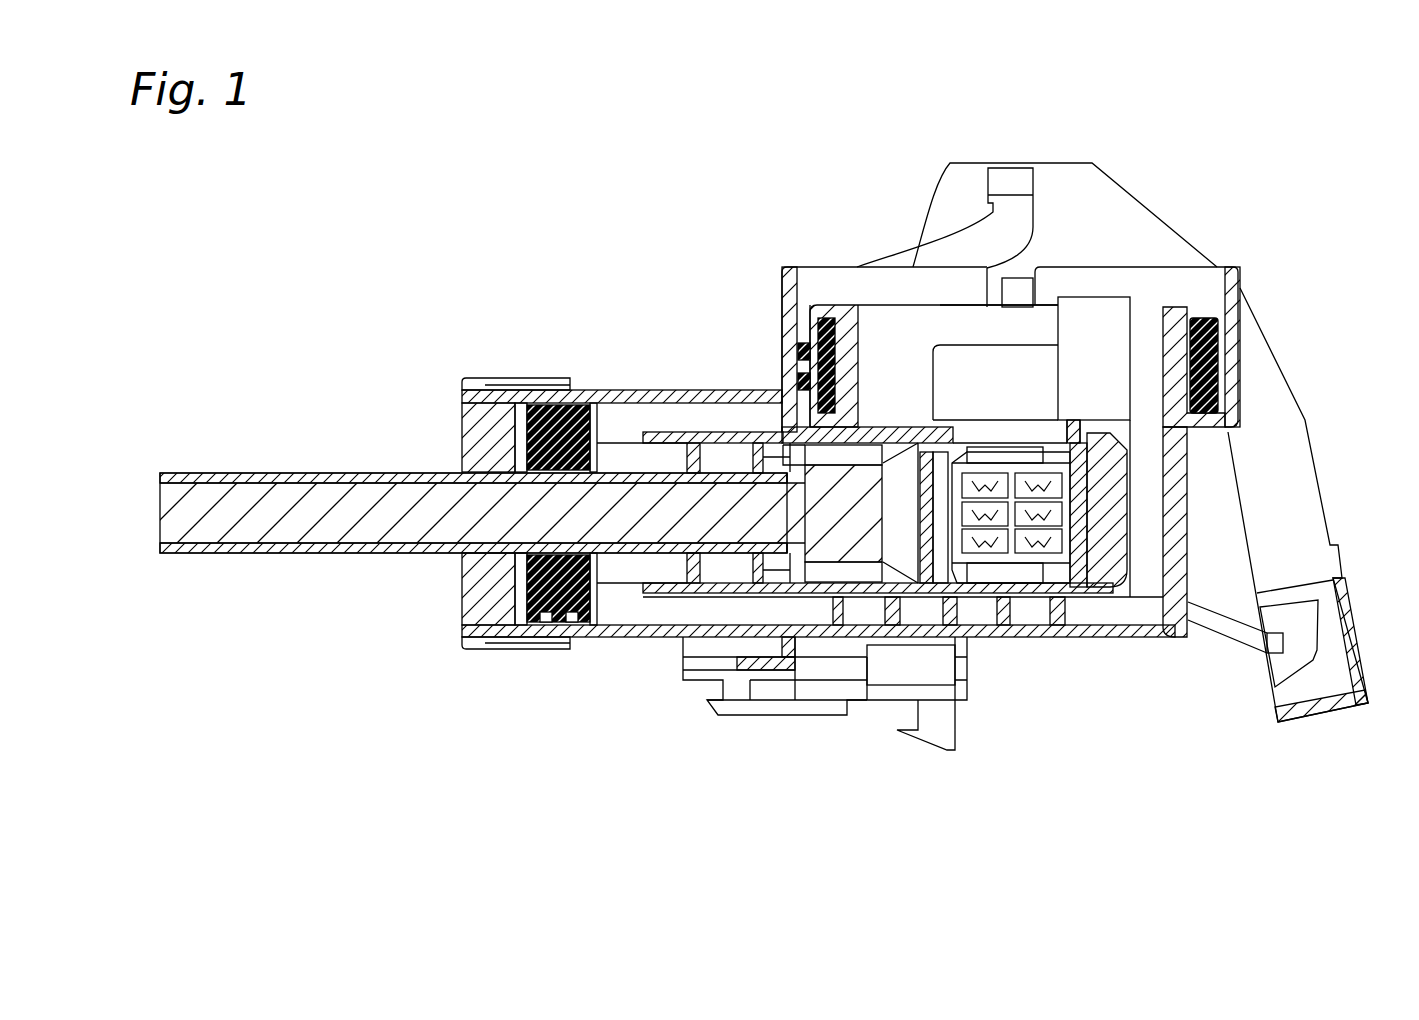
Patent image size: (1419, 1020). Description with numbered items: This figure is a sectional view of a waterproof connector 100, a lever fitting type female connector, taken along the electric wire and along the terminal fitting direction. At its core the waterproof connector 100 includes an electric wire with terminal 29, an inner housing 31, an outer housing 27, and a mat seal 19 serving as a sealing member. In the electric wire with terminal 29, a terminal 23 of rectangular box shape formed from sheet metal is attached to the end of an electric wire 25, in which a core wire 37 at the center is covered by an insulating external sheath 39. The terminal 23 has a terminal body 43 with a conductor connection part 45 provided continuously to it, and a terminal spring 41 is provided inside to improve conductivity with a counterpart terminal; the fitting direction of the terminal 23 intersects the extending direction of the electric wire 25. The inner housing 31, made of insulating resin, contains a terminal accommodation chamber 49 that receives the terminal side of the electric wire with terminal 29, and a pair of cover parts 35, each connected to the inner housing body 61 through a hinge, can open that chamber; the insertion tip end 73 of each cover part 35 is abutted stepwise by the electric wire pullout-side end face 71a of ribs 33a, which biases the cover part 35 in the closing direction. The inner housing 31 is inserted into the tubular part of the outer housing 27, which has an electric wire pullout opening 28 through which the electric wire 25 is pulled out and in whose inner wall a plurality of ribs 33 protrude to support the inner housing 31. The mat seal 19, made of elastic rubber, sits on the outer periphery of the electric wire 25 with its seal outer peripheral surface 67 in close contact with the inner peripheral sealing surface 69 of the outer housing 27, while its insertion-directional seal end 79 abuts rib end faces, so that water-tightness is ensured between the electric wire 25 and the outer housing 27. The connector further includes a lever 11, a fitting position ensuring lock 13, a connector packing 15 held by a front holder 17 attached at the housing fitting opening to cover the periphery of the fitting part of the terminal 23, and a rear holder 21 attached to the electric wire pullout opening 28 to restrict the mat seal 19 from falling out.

The waterproof connector 100 is at (603, 222).
The lever 11 is at (1300, 372).
The fitting position ensuring lock 13 is at (887, 675).
The connector packing 15 is at (1207, 350).
The front holder 17 is at (903, 304).
The mat seal 19 is at (570, 610).
The rear holder 21 is at (463, 435).
The terminal 23 is at (1093, 530).
The electric wire 25 is at (250, 560).
The outer housing 27 is at (820, 268).
The electric wire pullout opening 28 is at (460, 600).
The electric wire with terminal 29 is at (237, 437).
The inner housing 31 is at (1110, 600).
The ribs 33 is at (670, 630).
The ribs 33a is at (650, 413).
The cover part 35 is at (723, 430).
The core wire 37 is at (303, 500).
The external sheath 39 is at (320, 560).
The terminal spring 41 is at (1012, 555).
The terminal body 43 is at (1090, 485).
The conductor connection part 45 is at (823, 452).
The terminal accommodation chamber 49 is at (823, 590).
The inner housing body 61 is at (733, 590).
The seal outer peripheral surface 67 is at (560, 405).
The inner peripheral sealing surface 69 is at (548, 610).
The electric wire pullout-side end face 71a is at (583, 410).
The insertion tip end 73 is at (862, 438).
The insertion-directional seal end 79 is at (607, 608).